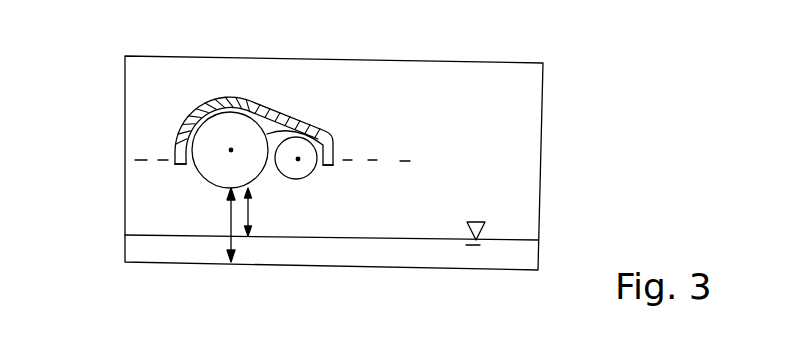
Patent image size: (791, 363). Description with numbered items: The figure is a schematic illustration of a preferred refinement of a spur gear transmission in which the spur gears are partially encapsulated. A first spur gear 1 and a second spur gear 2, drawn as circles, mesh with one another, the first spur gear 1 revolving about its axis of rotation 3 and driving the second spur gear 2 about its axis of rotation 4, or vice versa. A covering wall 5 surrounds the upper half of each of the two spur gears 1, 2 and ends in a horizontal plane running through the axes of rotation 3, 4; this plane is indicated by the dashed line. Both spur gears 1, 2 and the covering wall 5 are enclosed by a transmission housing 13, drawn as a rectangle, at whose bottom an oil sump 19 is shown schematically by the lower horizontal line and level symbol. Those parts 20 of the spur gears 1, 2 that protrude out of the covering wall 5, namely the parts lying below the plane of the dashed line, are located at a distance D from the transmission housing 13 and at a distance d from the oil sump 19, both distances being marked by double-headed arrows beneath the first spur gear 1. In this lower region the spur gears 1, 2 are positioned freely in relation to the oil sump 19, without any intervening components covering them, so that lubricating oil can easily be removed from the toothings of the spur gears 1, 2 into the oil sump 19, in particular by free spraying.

The first spur gear 1 is at (203, 173).
The second spur gear 2 is at (296, 177).
The axis of rotation 3 is at (231, 150).
The axis of rotation 4 is at (298, 159).
The covering wall 5 is at (292, 107).
The transmission housing 13 is at (542, 120).
The oil sump 19 is at (523, 250).
The parts of the spur gears 20 is at (173, 157).
The distance D is at (232, 218).
The distance d is at (250, 212).